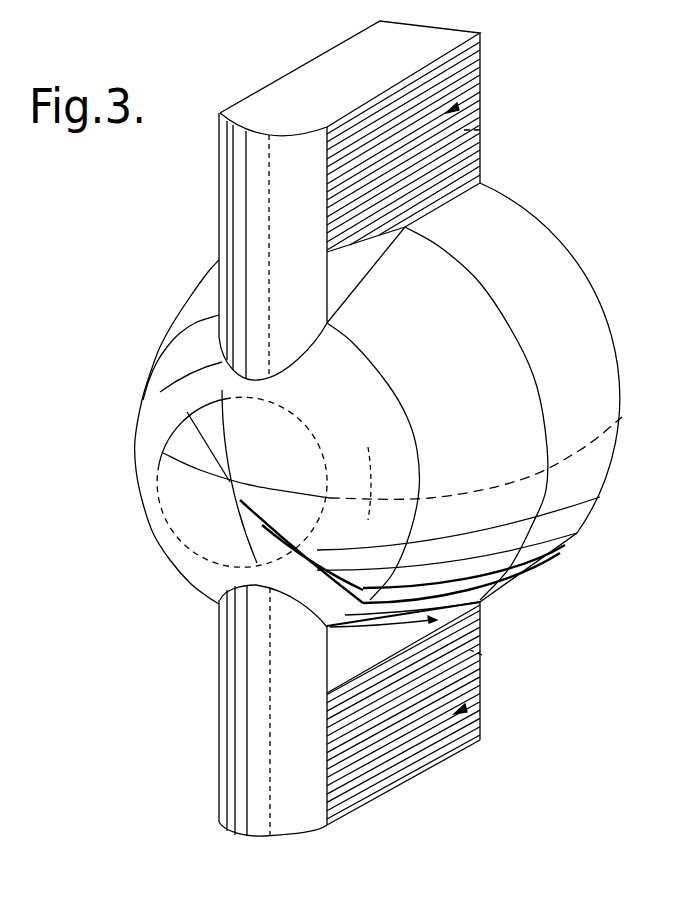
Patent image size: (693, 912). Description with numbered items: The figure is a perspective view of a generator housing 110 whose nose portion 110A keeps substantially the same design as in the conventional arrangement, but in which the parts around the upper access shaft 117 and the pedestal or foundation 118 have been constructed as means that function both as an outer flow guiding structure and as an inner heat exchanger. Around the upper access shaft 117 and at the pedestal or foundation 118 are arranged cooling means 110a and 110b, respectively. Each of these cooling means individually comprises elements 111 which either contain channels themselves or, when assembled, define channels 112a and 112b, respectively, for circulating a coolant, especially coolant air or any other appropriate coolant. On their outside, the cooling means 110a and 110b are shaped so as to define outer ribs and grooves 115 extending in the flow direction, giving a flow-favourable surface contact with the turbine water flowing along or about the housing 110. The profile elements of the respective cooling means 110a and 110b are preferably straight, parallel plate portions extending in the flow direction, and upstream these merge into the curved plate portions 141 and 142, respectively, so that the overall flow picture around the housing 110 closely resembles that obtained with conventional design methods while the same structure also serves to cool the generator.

The generator housing 110 is at (590, 283).
The nose portion 110A is at (163, 488).
The cooling means 110a is at (455, 107).
The cooling means 110b is at (463, 708).
The elements 111 is at (447, 157).
The channel 112a is at (480, 130).
The channel 112b is at (487, 660).
The outer ribs and grooves 115 is at (480, 72).
The upper access shaft 117 is at (300, 78).
The pedestal or foundation 118 is at (437, 755).
The curved plate portion 141 is at (232, 222).
The curved plate portion 142 is at (237, 733).